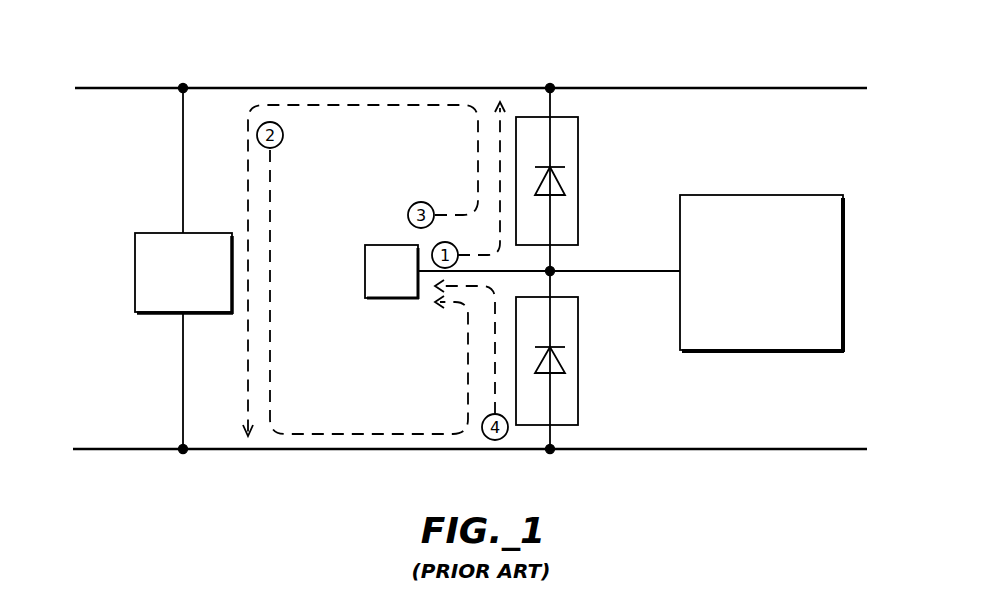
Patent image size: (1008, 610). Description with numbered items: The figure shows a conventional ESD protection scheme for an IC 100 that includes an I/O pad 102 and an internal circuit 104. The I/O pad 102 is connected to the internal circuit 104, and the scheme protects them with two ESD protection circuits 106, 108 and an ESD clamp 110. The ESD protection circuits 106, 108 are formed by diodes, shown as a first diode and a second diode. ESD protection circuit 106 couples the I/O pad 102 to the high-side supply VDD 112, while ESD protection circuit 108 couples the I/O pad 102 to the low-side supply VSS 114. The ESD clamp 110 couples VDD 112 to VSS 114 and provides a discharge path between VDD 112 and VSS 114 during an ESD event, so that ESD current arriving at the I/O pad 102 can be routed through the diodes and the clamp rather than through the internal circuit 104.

The IC 100 is at (649, 75).
The I/O pad 102 is at (391, 245).
The internal circuit 104 is at (712, 195).
The ESD protection circuit 106 is at (578, 150).
The ESD protection circuit 108 is at (578, 410).
The ESD clamp 110 is at (160, 233).
The high-side supply VDD 112 is at (313, 88).
The low-side supply VSS 114 is at (153, 449).